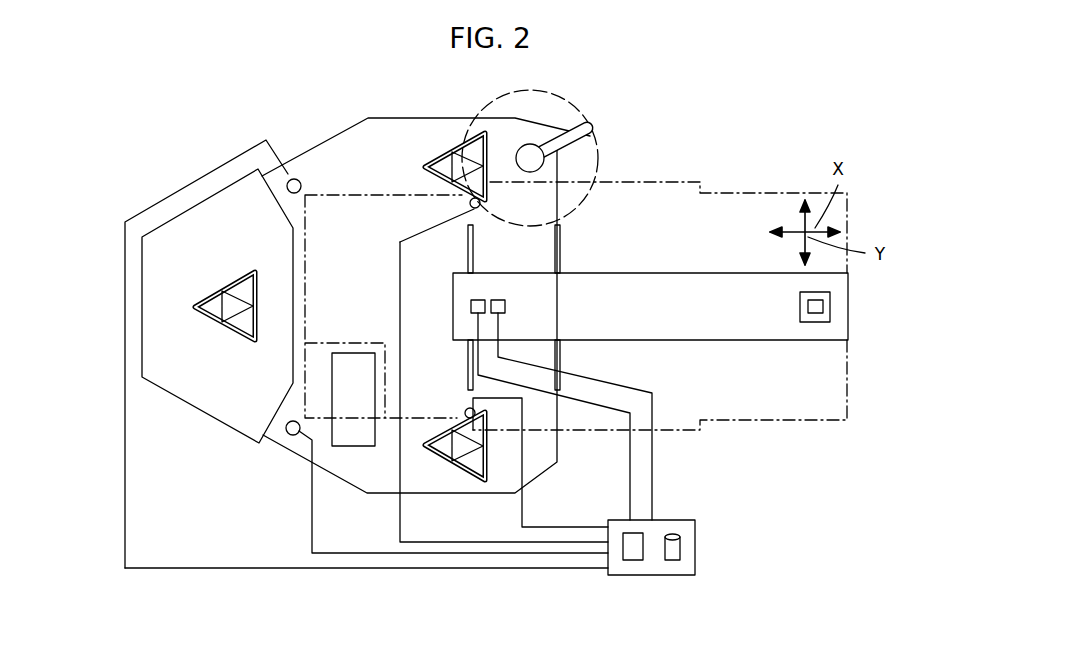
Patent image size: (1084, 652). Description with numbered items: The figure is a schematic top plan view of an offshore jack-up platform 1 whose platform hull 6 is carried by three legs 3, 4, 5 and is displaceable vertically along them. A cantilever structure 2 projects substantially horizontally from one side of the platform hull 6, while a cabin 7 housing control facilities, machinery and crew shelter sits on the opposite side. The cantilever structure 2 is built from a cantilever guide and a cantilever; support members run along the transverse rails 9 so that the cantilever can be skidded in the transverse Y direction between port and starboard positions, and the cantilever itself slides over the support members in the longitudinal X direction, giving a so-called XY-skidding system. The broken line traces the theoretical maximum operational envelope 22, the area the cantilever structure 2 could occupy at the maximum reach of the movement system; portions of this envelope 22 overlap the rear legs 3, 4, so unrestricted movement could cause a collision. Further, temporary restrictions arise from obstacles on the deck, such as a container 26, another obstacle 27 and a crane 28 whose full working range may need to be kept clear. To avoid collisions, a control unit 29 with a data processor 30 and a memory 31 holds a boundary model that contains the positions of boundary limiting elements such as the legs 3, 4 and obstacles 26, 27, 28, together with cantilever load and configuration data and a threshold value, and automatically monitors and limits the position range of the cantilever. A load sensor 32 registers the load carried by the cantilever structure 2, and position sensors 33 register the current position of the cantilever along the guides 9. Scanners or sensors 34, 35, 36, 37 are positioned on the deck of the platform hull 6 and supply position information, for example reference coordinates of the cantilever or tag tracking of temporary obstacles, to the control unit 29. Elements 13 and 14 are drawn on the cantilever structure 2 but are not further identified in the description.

The jack-up platform 1 is at (614, 144).
The cantilever structure 2 is at (720, 216).
The leg 3 is at (462, 177).
The leg 4 is at (465, 477).
The leg 5 is at (215, 289).
The platform hull 6 is at (302, 461).
The cabin 7 is at (174, 380).
The transverse rails 9 is at (476, 250).
The holder 13 is at (817, 325).
The sensor 14 is at (825, 305).
The theoretical maximum operational envelope 22 is at (790, 422).
The container 26 is at (355, 447).
The obstacle 27 is at (345, 342).
The crane 28 is at (570, 123).
The control unit 29 is at (700, 548).
The data processor 30 is at (633, 563).
The memory 31 is at (672, 563).
The load sensor 32 is at (468, 306).
The position sensors 33 is at (508, 306).
The scanner 34 is at (302, 184).
The scanner 35 is at (285, 437).
The scanner 36 is at (468, 205).
The scanner 37 is at (465, 409).